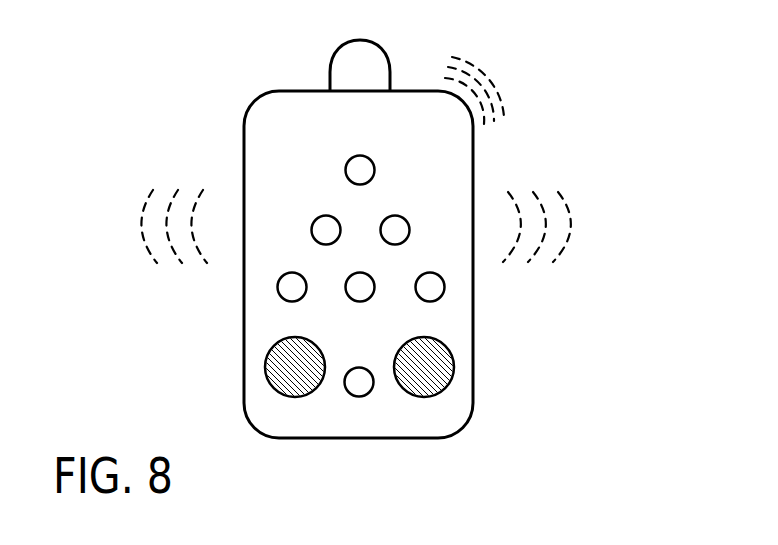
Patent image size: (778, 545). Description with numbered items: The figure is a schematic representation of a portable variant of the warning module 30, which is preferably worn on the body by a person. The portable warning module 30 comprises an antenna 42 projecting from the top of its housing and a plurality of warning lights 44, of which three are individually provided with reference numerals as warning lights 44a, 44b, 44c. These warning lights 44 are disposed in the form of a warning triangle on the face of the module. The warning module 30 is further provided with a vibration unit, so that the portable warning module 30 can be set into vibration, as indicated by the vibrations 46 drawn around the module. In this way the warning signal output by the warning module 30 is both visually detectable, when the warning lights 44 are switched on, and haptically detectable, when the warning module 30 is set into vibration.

The warning module 30 is at (407, 442).
The antenna 42 is at (332, 55).
The warning lights 44 is at (293, 205).
The warning light 44a is at (373, 157).
The warning light 44b is at (405, 213).
The warning light 44c is at (445, 298).
The vibrations 46 is at (580, 222).